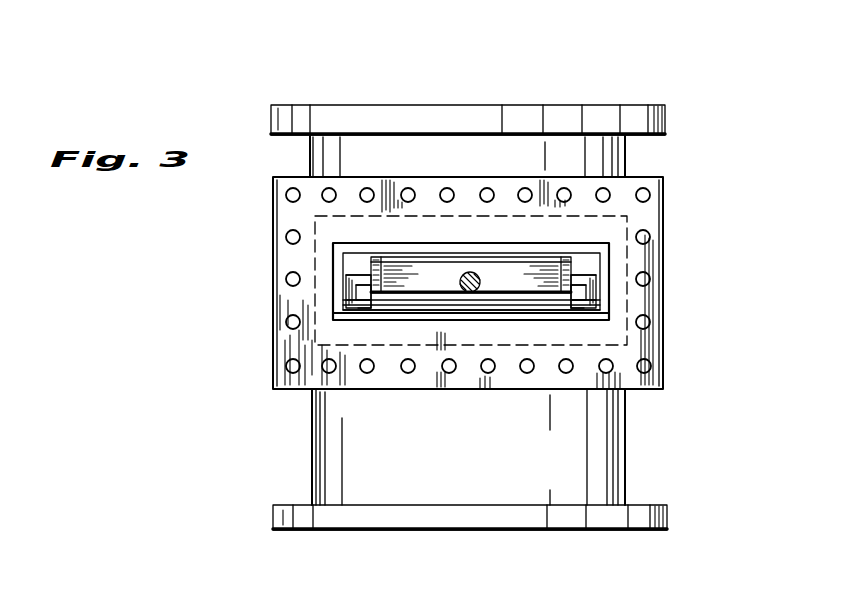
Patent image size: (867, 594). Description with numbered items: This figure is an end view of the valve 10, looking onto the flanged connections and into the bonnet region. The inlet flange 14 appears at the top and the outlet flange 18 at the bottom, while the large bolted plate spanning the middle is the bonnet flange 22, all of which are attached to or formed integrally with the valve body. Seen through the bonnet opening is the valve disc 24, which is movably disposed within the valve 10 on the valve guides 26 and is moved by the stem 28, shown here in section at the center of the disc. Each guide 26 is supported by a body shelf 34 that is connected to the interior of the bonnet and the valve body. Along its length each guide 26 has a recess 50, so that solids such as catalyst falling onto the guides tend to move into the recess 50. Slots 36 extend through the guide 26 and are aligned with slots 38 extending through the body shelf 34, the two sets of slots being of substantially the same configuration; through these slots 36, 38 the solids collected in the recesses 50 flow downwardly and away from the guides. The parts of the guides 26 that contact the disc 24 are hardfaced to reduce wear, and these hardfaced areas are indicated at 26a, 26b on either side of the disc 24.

The valve 10 is at (260, 180).
The inlet flange 14 is at (618, 105).
The outlet flange 18 is at (636, 528).
The bonnet flange 22 is at (661, 202).
The valve disc 24 is at (609, 274).
The valve guide 26 is at (345, 293).
The hardfaced area 26a is at (368, 270).
The hardfaced area 26b is at (370, 272).
The stem 28 is at (470, 272).
The body shelf 34 is at (458, 314).
The slot 36 is at (377, 305).
The slot 38 is at (372, 330).
The recess 50 is at (367, 300).